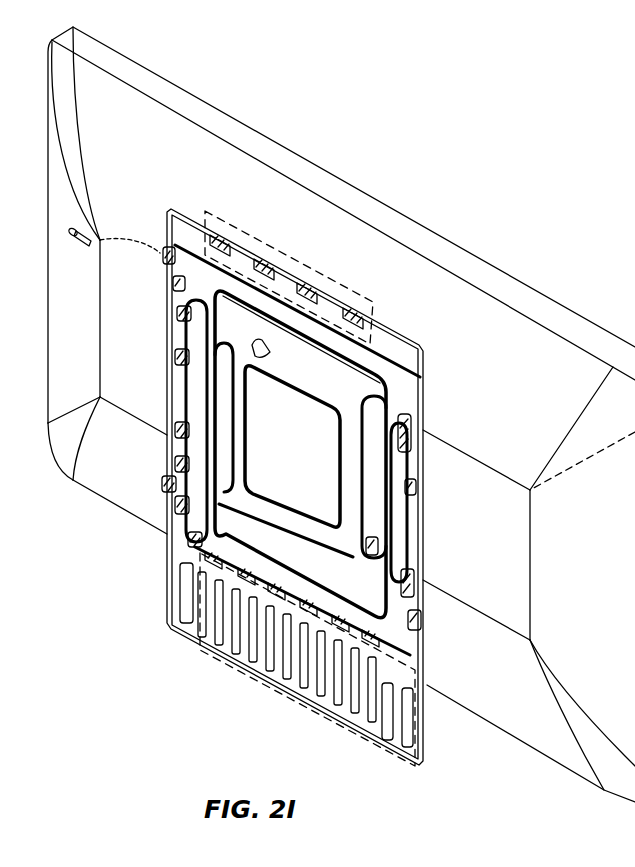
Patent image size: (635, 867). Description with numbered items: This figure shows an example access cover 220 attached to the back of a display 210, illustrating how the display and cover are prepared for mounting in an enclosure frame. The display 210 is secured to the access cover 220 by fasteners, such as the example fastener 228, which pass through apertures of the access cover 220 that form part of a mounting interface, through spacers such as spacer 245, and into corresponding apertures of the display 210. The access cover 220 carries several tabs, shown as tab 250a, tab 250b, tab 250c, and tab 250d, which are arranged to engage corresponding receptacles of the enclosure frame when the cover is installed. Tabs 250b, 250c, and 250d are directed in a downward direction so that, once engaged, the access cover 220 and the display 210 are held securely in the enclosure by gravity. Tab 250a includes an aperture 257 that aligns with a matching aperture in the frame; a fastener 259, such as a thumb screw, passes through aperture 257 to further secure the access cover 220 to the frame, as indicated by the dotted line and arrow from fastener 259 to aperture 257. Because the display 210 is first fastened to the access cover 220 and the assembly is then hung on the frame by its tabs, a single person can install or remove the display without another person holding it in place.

The display 210 is at (572, 328).
The access cover 220 is at (413, 440).
The fastener 228 is at (249, 358).
The spacer 245 is at (264, 478).
The tab 250a is at (160, 257).
The tab 250b is at (300, 264).
The tab 250c is at (240, 673).
The tab 250d is at (283, 597).
The aperture 257 is at (165, 273).
The fastener 259 is at (86, 232).